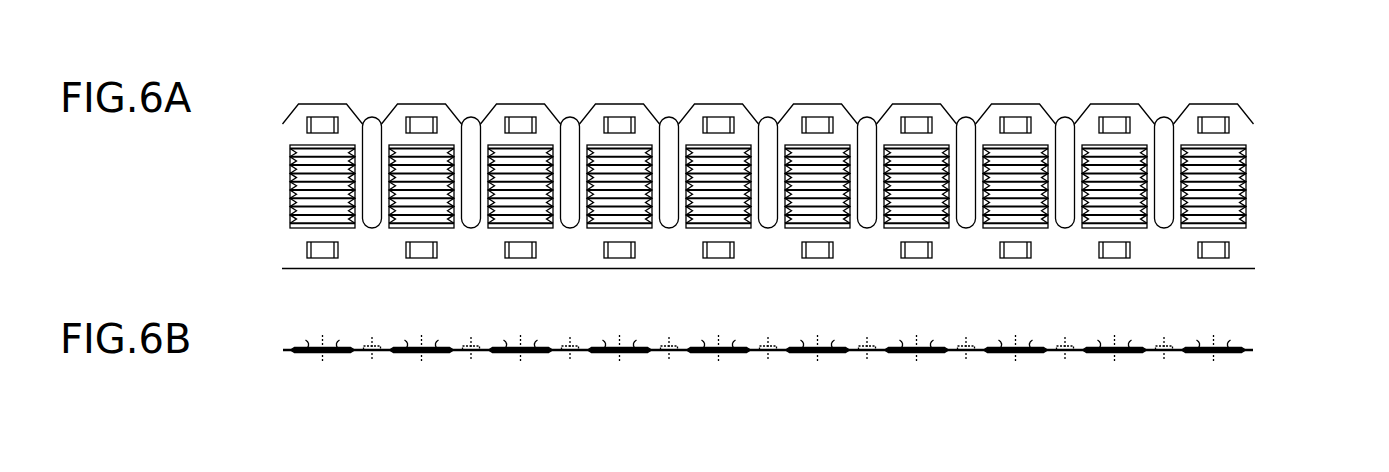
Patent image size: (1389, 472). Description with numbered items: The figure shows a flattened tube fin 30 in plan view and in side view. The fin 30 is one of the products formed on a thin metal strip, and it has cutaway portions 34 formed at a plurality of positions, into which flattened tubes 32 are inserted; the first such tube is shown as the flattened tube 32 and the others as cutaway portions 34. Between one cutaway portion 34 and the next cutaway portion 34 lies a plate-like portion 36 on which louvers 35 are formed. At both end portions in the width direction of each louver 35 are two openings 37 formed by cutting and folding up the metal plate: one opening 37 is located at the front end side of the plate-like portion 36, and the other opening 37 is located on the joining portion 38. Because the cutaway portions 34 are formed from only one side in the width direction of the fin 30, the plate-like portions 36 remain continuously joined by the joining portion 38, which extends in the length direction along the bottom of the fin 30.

In FIG. 6A, the fin 30 is at (588, 69).
In FIG. 6A, the flattened tube 32 is at (374, 120).
In FIG. 6A, the cutaway portion 34 is at (472, 148).
In FIG. 6B, the cutaway portion 34 is at (478, 353).
In FIG. 6A, the louver 35 is at (310, 193).
In FIG. 6A, the plate-like portion 36 is at (745, 137).
In FIG. 6A, the opening 37 is at (323, 125).
In FIG. 6B, the opening 37 is at (322, 354).
In FIG. 6A, the joining portion 38 is at (960, 258).